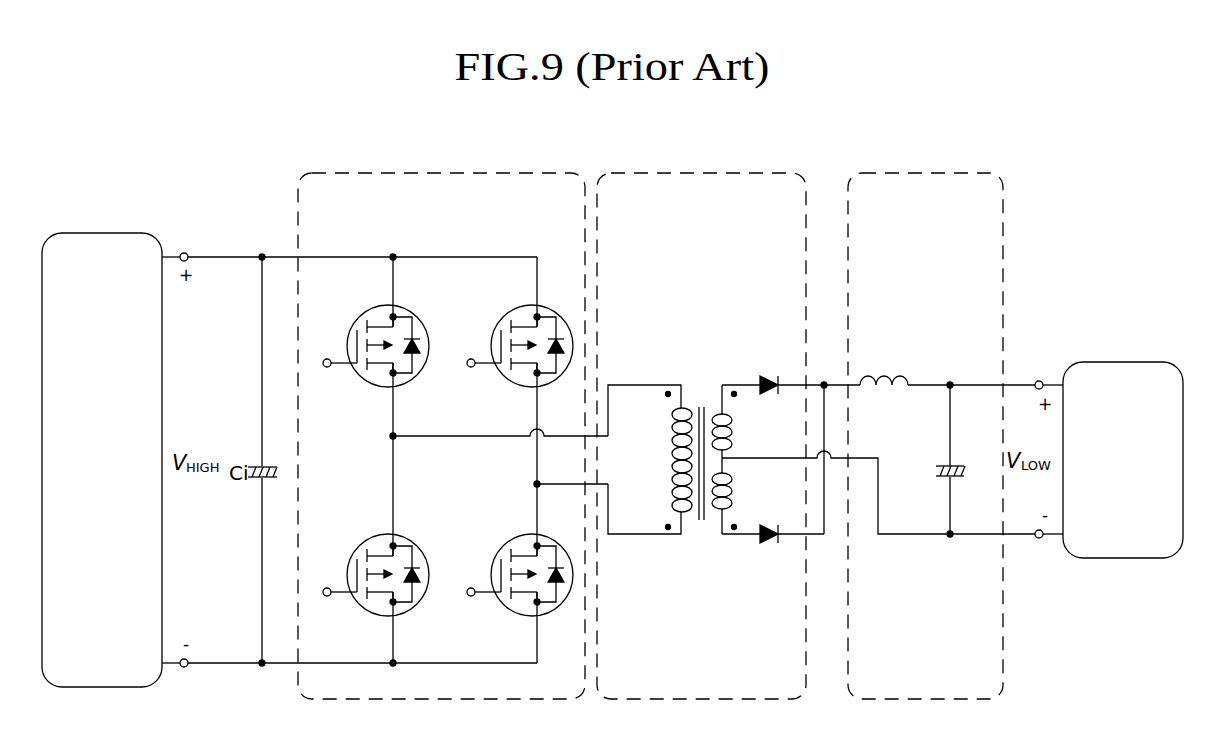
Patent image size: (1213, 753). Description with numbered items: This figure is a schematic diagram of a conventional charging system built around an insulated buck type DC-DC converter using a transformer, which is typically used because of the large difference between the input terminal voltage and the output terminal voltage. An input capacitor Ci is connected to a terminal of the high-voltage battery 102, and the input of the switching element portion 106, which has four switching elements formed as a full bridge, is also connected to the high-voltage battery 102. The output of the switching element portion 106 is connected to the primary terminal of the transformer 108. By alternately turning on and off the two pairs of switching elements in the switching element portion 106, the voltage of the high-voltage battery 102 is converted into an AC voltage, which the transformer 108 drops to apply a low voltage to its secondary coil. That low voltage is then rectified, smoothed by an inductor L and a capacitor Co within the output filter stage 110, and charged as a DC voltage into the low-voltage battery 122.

The high-voltage battery 102 is at (102, 440).
The switching element portion 106 is at (453, 412).
The transformer 108 is at (722, 412).
The output LC filter 110 is at (929, 412).
The low-voltage battery 122 is at (1123, 438).